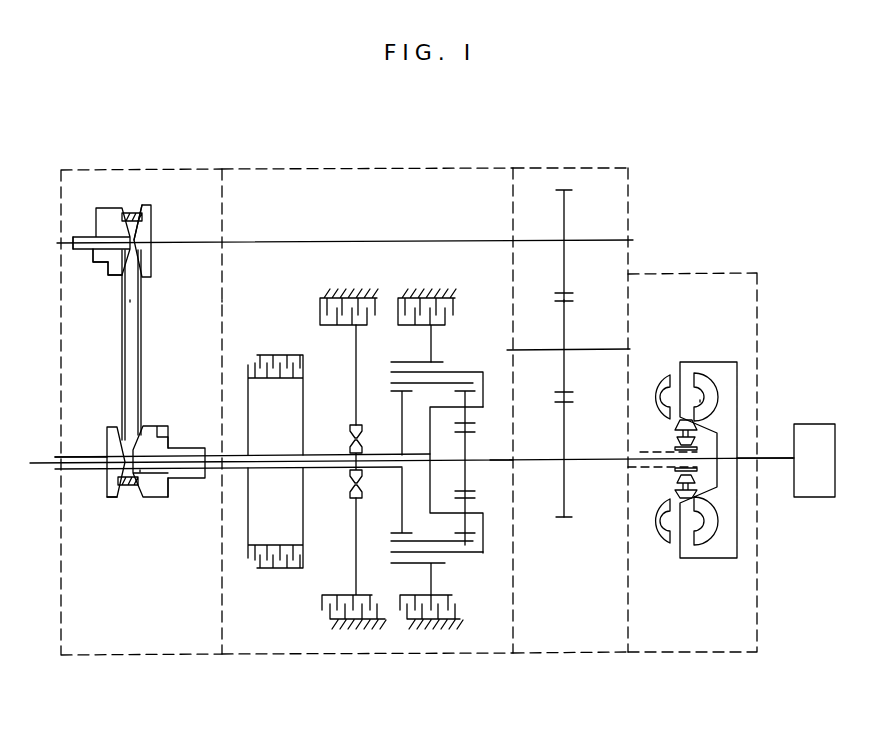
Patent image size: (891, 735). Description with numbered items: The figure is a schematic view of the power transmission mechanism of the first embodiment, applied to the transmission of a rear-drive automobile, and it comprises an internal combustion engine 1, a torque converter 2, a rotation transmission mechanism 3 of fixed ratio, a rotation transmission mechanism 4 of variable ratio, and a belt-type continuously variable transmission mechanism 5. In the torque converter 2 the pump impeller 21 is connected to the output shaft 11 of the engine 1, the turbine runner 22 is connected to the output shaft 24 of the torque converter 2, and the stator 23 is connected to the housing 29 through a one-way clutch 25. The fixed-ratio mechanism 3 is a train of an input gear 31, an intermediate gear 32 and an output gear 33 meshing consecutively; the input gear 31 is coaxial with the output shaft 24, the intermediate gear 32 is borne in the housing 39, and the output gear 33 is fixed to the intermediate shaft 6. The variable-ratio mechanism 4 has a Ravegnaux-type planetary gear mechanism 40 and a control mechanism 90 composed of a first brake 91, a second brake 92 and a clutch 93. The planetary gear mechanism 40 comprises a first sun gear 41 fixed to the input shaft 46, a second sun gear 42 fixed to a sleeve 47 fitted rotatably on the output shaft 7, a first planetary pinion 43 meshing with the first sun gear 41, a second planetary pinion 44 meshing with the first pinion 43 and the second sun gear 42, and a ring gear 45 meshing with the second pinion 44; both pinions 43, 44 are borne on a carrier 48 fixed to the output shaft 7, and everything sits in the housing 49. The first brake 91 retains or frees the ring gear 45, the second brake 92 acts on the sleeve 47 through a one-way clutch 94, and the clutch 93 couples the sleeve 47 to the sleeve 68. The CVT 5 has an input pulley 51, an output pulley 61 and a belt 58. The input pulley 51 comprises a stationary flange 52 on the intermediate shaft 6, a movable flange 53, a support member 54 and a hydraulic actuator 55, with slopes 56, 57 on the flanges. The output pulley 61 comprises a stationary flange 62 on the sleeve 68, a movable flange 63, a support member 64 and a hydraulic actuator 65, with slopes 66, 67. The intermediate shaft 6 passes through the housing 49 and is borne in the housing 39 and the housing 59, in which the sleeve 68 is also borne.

The internal combustion engine 1 is at (833, 420).
The output shaft 11 is at (772, 462).
The torque converter 2 is at (740, 320).
The pump impeller 21 is at (670, 385).
The turbine runner 22 is at (717, 400).
The stator 23 is at (680, 505).
The output shaft 24 is at (638, 452).
The one-way clutch 25 is at (675, 482).
The housing 29 is at (690, 272).
The rotation transmission mechanism of fixed ratio 3 is at (610, 208).
The input gear 31 is at (564, 492).
The intermediate gear 32 is at (575, 318).
The output gear 33 is at (565, 212).
The housing 39 is at (543, 167).
The rotation transmission mechanism of variable ratio 4 is at (365, 200).
The Ravegnaux-type planetary gear mechanism 40 is at (455, 570).
The first sun gear 41 is at (468, 448).
The second sun gear 42 is at (400, 490).
The first planetary pinion 43 is at (470, 505).
The second planetary pinion 44 is at (393, 548).
The ring gear 45 is at (443, 362).
The input shaft 46 is at (500, 458).
The sleeve 47 is at (318, 470).
The carrier 48 is at (484, 530).
The housing 49 is at (300, 655).
The belt-type continuously variable transmission mechanism 5 is at (155, 198).
The input pulley 51 is at (100, 200).
The stationary flange 52 is at (153, 233).
The movable flange 53 is at (105, 280).
The support member 54 is at (98, 266).
The hydraulic actuator 55 is at (96, 222).
The slope 56 is at (143, 205).
The slope 57 is at (128, 212).
The belt 58 is at (145, 365).
The housing 59 is at (145, 657).
The intermediate shaft 6 is at (413, 240).
The output pulley 61 is at (163, 507).
The stationary flange 62 is at (107, 440).
The movable flange 63 is at (152, 428).
The support member 64 is at (185, 478).
The hydraulic actuator 65 is at (167, 442).
The slope 66 is at (118, 486).
The slope 67 is at (140, 486).
The sleeve 68 is at (77, 471).
The output shaft 7 is at (48, 470).
The control mechanism 90 is at (302, 280).
The first brake 91 is at (455, 298).
The second brake 92 is at (377, 305).
The clutch 93 is at (303, 370).
The one-way clutch 94 is at (353, 437).